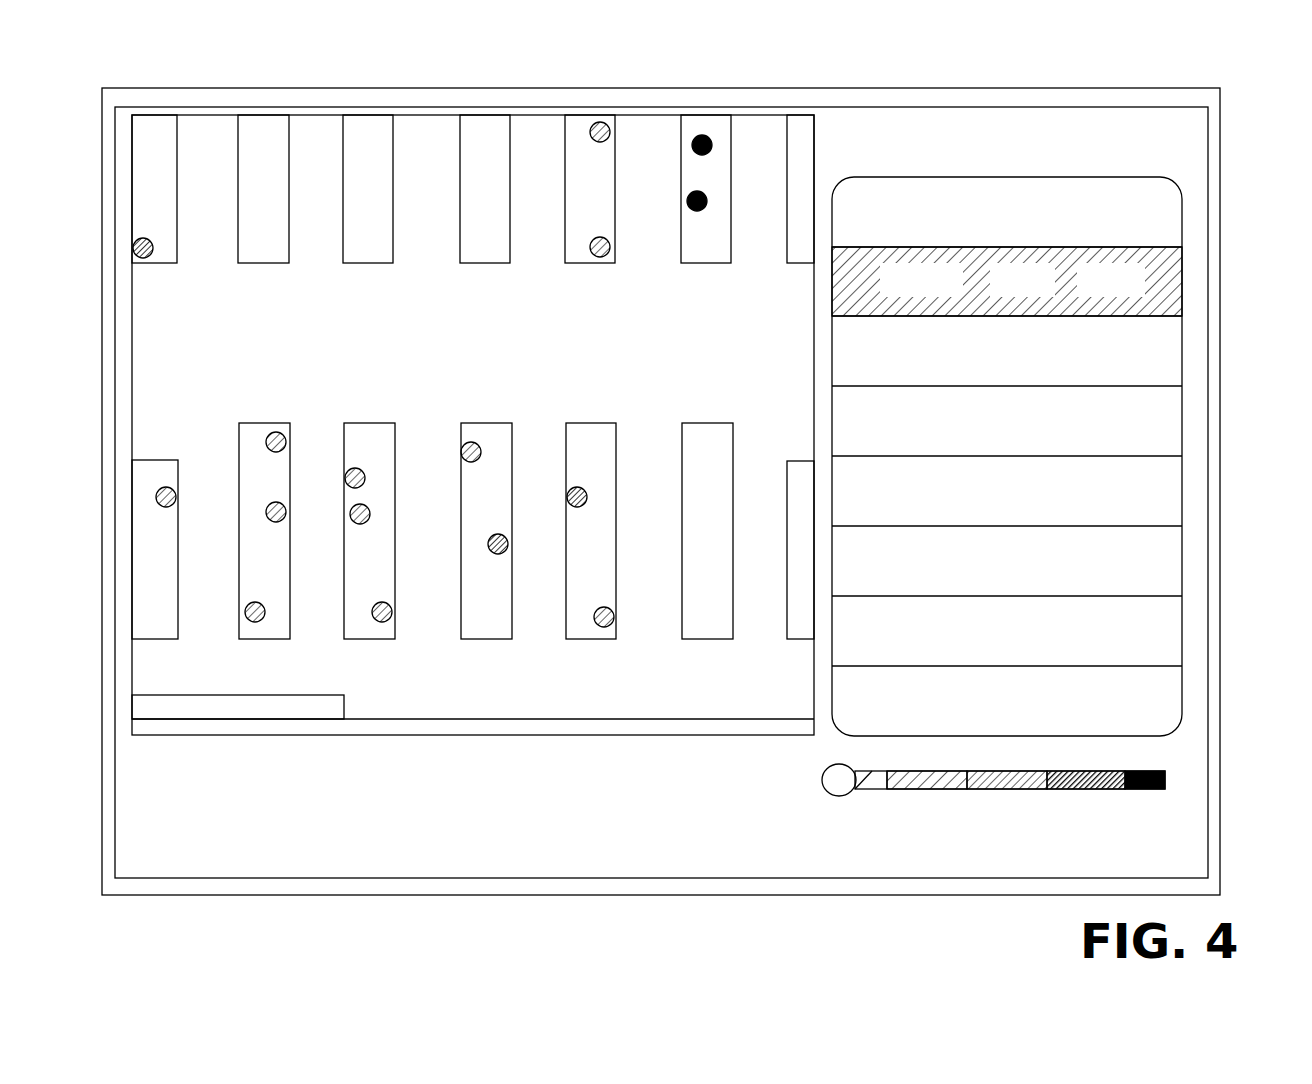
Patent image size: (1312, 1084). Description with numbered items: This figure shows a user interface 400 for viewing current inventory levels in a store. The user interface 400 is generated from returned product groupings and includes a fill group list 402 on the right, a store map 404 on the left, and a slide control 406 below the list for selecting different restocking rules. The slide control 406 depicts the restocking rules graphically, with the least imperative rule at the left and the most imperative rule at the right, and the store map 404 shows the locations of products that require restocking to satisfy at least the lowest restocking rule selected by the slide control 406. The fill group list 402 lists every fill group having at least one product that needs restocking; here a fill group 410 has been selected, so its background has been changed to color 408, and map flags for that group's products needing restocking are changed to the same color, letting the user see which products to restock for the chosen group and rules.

The user interface 400 is at (487, 788).
The fill group list 402 is at (1067, 390).
The store map 404 is at (408, 210).
The slide control 406 is at (920, 793).
The color 408 is at (1067, 256).
The fill group 410 is at (1177, 298).